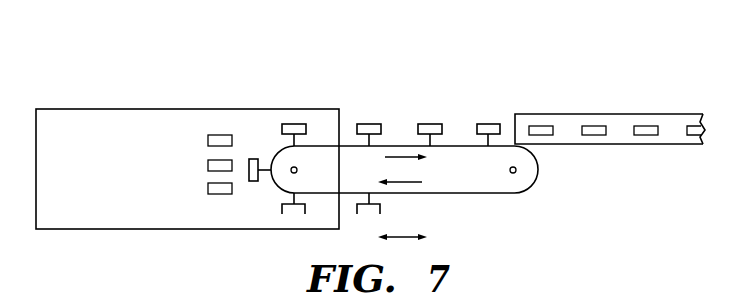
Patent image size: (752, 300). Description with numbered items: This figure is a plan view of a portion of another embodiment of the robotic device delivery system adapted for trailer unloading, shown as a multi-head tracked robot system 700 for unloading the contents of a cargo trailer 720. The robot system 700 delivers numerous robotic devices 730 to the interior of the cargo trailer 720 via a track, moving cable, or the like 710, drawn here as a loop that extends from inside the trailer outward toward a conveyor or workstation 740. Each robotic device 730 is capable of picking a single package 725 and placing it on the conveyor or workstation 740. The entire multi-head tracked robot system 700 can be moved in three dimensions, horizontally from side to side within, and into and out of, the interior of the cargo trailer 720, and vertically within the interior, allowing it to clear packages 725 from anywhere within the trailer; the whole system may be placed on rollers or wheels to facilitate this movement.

The multi-head tracked robot system 700 is at (648, 48).
The track 710 is at (533, 185).
The cargo trailer 720 is at (104, 122).
The package 725 is at (221, 137).
The robotic device 730 is at (381, 208).
The conveyor or workstation 740 is at (617, 120).